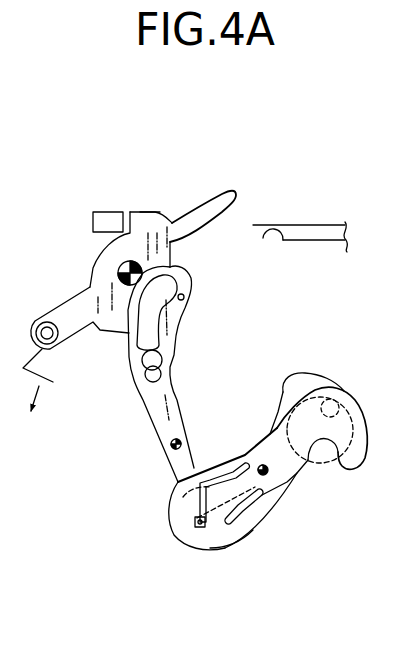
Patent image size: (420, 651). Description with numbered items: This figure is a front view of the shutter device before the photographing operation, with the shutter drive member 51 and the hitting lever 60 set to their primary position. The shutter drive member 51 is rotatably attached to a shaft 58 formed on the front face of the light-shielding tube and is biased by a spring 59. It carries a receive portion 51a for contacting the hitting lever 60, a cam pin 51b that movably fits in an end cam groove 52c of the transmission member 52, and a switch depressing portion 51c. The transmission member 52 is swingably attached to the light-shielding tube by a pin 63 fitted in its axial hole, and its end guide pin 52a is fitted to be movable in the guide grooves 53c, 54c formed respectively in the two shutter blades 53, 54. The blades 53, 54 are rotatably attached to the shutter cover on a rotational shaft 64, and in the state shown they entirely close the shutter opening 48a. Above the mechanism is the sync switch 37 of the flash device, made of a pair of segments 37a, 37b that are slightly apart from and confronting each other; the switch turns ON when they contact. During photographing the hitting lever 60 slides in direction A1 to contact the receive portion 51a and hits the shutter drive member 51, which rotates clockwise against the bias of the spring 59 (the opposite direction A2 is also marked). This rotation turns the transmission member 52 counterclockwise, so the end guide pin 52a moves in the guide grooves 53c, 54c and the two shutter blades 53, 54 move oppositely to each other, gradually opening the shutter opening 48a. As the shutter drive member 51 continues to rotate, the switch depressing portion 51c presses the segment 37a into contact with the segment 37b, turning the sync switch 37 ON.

The sync switch 37 is at (360, 172).
The segment 37a is at (282, 223).
The segment 37b is at (317, 240).
The shutter opening 48a is at (340, 393).
The shutter drive member 51 is at (164, 210).
The receive portion 51a is at (155, 211).
The cam pin 51b is at (153, 359).
The switch depressing portion 51c is at (190, 214).
The transmission member 52 is at (141, 423).
The end guide pin 52a is at (197, 540).
The end cam groove 52c is at (137, 330).
The shutter blade 53 is at (292, 366).
The guide groove 53c is at (236, 506).
The shutter blade 54 is at (371, 471).
The guide groove 54c is at (222, 472).
The shaft 58 is at (121, 266).
The spring 59 is at (53, 382).
The hitting lever 60 is at (103, 210).
The pin 63 is at (169, 446).
The rotational shaft 64 is at (268, 471).
The direction A1 is at (77, 165).
The direction A2 is at (78, 202).